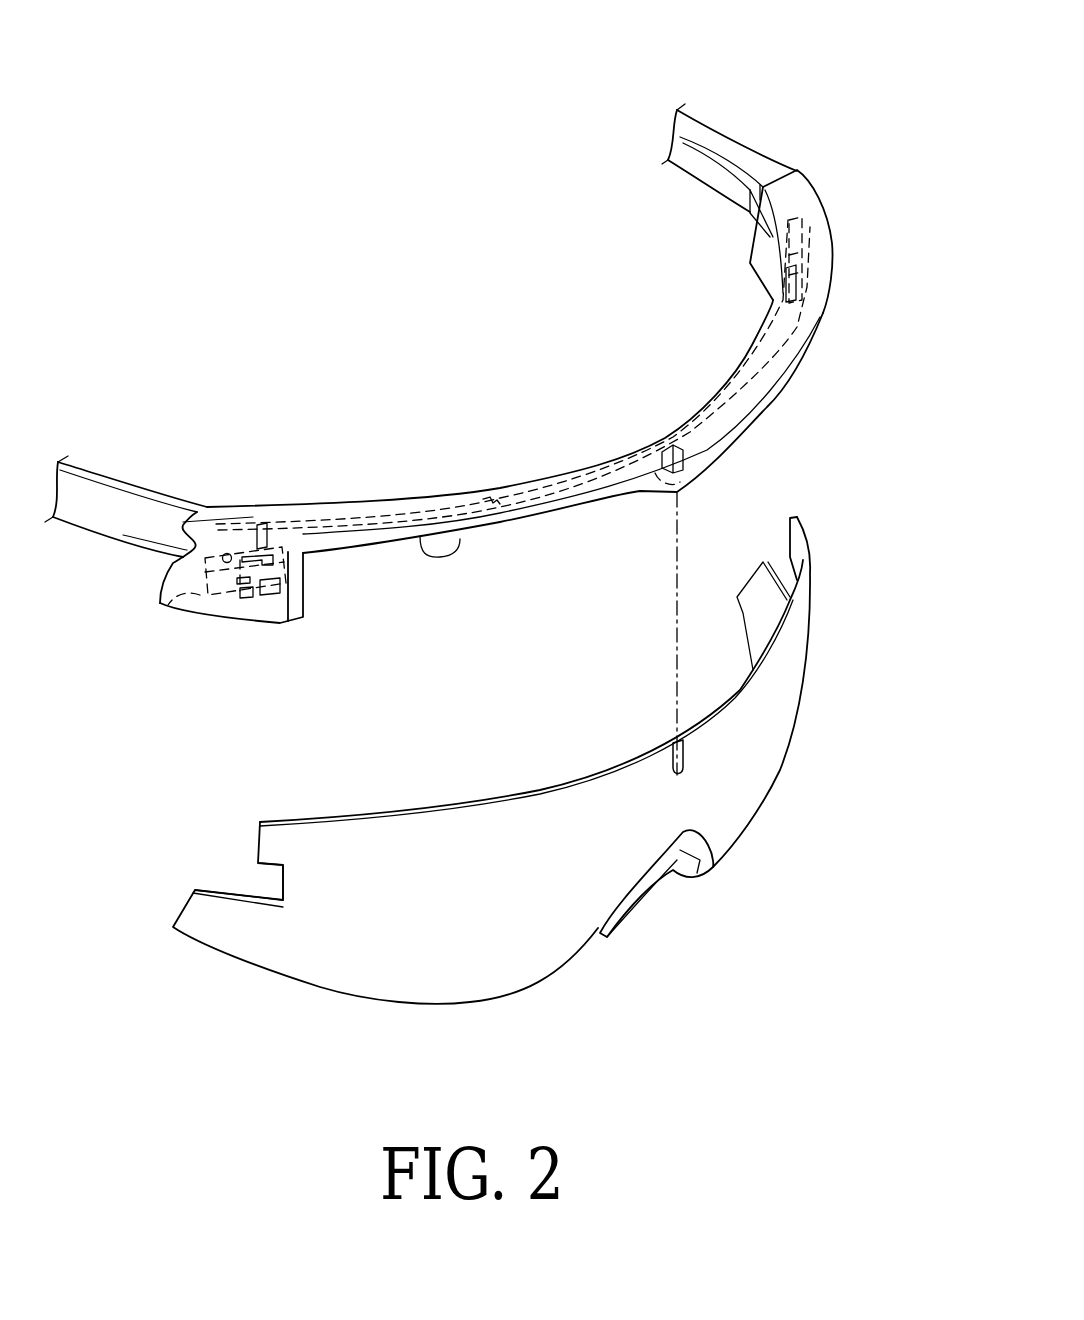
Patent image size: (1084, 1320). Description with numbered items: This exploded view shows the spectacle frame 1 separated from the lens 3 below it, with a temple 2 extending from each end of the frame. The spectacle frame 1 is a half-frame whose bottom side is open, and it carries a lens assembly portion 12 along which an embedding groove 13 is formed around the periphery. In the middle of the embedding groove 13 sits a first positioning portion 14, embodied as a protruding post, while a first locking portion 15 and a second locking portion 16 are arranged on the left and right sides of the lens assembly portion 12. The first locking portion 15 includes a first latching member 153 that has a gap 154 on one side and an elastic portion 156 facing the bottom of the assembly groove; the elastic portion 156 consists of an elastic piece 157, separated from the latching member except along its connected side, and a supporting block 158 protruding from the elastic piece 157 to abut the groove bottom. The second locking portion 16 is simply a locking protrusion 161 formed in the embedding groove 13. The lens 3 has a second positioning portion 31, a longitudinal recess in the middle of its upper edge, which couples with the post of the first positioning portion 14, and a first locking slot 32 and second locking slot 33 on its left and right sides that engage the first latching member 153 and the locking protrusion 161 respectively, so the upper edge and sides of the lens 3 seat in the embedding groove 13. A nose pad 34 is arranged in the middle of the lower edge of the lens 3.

The spectacle frame 1 is at (702, 413).
The temple 2 is at (700, 130).
The lens 3 is at (397, 987).
The lens assembly portion 12 is at (421, 535).
The embedding groove 13 is at (483, 498).
The first positioning portion 14 is at (641, 458).
The first locking portion 15 is at (221, 521).
The second locking portion 16 is at (828, 215).
The locking protrusion 161 is at (812, 296).
The first latching member 153 is at (200, 595).
The gap 154 is at (262, 523).
The elastic portion 156 is at (275, 605).
The elastic piece 157 is at (225, 598).
The supporting block 158 is at (248, 600).
The second positioning portion 31 is at (680, 772).
The first locking slot 32 is at (258, 862).
The second locking slot 33 is at (790, 557).
The nose pad 34 is at (617, 923).